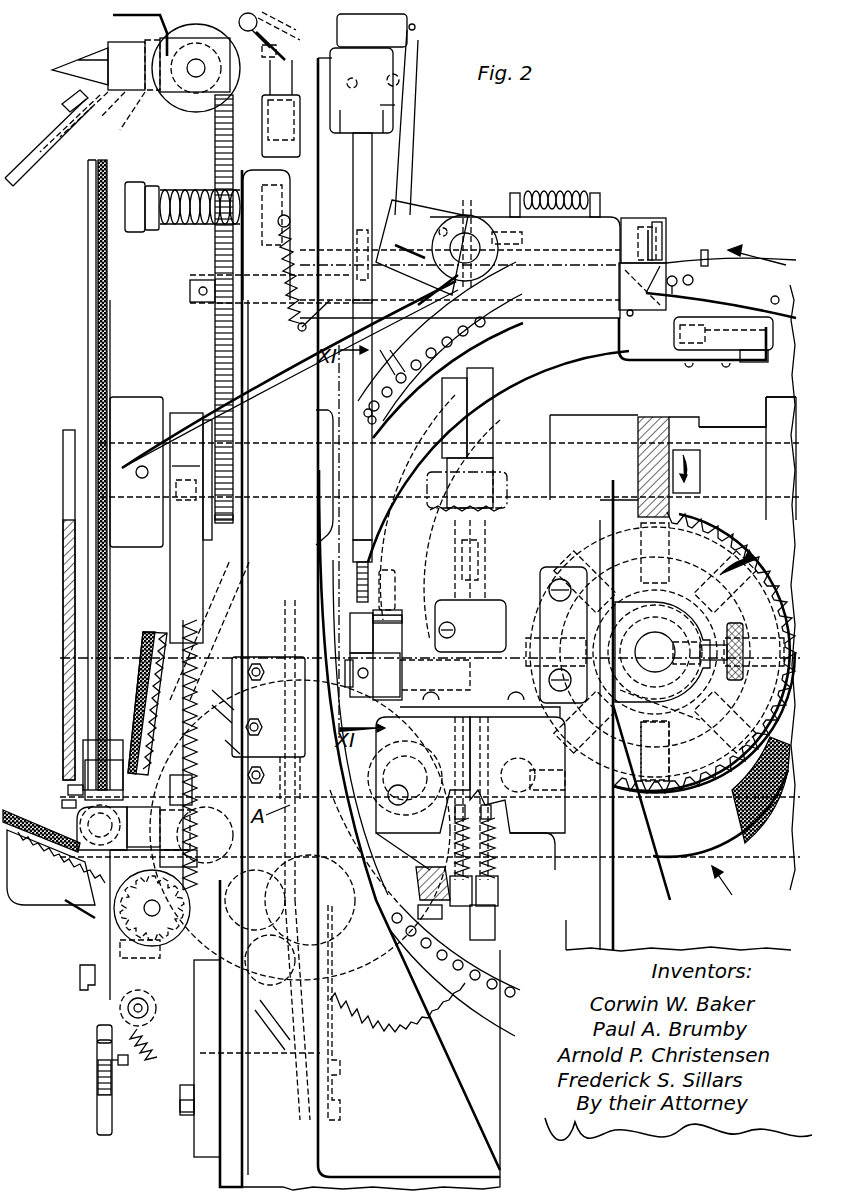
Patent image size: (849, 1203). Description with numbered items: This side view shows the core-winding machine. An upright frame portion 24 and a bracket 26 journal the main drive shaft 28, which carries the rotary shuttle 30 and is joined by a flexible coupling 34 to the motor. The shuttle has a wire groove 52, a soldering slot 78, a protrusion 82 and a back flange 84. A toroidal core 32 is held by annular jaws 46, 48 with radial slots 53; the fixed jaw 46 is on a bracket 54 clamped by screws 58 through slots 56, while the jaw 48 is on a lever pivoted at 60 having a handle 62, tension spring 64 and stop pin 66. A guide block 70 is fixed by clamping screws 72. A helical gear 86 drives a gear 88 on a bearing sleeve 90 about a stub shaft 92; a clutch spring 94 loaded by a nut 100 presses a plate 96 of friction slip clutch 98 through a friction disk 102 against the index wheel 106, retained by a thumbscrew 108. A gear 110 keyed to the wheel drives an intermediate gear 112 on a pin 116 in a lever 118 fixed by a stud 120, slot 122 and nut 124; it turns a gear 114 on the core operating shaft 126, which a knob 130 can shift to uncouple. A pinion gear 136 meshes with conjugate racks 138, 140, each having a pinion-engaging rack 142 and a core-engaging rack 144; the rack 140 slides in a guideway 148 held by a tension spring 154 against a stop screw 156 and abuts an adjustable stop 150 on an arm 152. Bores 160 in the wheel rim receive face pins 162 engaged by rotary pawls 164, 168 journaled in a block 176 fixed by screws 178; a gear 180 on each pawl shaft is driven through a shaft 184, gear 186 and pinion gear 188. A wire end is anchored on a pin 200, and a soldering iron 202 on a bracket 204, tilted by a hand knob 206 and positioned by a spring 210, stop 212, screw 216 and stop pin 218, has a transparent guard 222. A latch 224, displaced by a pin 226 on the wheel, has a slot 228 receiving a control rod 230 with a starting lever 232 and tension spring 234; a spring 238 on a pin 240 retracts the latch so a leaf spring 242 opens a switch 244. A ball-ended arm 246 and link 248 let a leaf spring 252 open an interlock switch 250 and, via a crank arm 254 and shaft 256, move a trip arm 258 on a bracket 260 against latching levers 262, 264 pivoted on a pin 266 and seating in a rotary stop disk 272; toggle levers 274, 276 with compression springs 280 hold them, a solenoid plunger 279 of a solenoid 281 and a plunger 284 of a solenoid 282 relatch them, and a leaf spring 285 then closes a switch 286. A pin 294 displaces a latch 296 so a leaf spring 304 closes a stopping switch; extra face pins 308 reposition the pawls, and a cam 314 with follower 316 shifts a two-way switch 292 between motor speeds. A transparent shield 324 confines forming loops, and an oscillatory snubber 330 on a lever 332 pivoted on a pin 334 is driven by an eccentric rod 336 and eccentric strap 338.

The upright front portion 24 is at (242, 566).
The vertically extending bracket 26 is at (664, 890).
The main drive shaft 28 is at (682, 450).
The rotary shuttle 30 is at (87, 378).
The toroidal core 32 is at (62, 804).
The flexible coupling 34 is at (766, 400).
The annular jaw 46 is at (162, 766).
The annular jaw 48 is at (77, 822).
The wire-carrying groove 52 is at (87, 347).
The radial slots 53 is at (68, 790).
The bracket 54 is at (193, 1147).
The vertically extending slots 56 is at (193, 1063).
The clamp screws 58 is at (182, 1108).
The pivot 60 is at (80, 973).
The operating handle 62 is at (96, 1100).
The tension spring 64 is at (152, 1052).
The stop pin 66 is at (122, 1066).
The guide block 70 is at (78, 775).
The clamping screws 72 is at (200, 845).
The peripheral slot 78 is at (87, 186).
The protrusion 82 is at (85, 745).
The annular back flange 84 is at (108, 308).
The helical gear 86 is at (652, 417).
The gear 88 is at (672, 792).
The bearing sleeve 90 is at (712, 708).
The stub shaft 92 is at (645, 663).
The clutch spring 94 is at (744, 660).
The clutch plate 96 is at (720, 848).
The friction slip clutch 98 is at (733, 883).
The nut 100 is at (700, 540).
The friction disk 102 is at (766, 828).
The index wheel 106 is at (498, 1000).
The thumbscrew 108 is at (768, 600).
The gear 110 is at (670, 750).
The intermediate gear 112 is at (450, 1000).
The gear 114 is at (70, 905).
The pin 116 is at (398, 768).
The lever 118 is at (305, 878).
The stud 120 is at (322, 895).
The vertically disposed slot 122 is at (428, 955).
The nut 124 is at (405, 815).
The core operating shaft 126 is at (118, 920).
The knob 130 is at (112, 950).
The pinion gear 136 is at (240, 895).
The conjugate rack 138 is at (155, 615).
The conjugate rack 140 is at (280, 960).
The pinion-engaging rack 142 is at (196, 718).
The core-engaging rack 144 is at (145, 640).
The guideway 148 is at (18, 900).
The adjustable stop 150 is at (345, 980).
The arm 152 is at (342, 1020).
The tension spring 154 is at (260, 1043).
The stop screw 156 is at (268, 1012).
The bores 160 is at (418, 360).
The face pins 162 is at (778, 296).
The rotary pawl 164 is at (668, 268).
The rotary pawl 168 is at (656, 297).
The block 176 is at (402, 325).
The screws 178 is at (350, 205).
The gear 180 is at (298, 328).
The shaft 184 is at (192, 285).
The gear 186 is at (214, 338).
The pinion gear 188 is at (228, 524).
The anchor pin 200 is at (136, 232).
The soldering iron 202 is at (112, 95).
The bracket 204 is at (284, 58).
The hand knob 206 is at (203, 112).
The spring 210 is at (272, 215).
The stop 212 is at (281, 108).
The screw 216 is at (272, 70).
The stop pin 218 is at (282, 38).
The transparent guard 222 is at (118, 30).
The switch actuating latch 224 is at (645, 218).
The pin 226 is at (660, 245).
The horizontal slot 228 is at (466, 232).
The control rod 230 is at (482, 246).
The starting lever 232 is at (190, 404).
The tension spring 234 is at (283, 316).
The spring 238 is at (560, 215).
The pin 240 is at (515, 193).
The leaf spring 242 is at (402, 160).
The switch 244 is at (409, 26).
The ball-ended arm 246 is at (432, 205).
The link 248 is at (378, 420).
The interlock switch 250 is at (376, 128).
The leaf spring 252 is at (347, 125).
The crank arm 254 is at (390, 615).
The shaft 256 is at (412, 650).
The trip arm 258 is at (420, 577).
The bracket 260 is at (495, 770).
The latching lever 262 is at (430, 510).
The latching lever 264 is at (497, 485).
The pin 266 is at (402, 682).
The rotary stop disk 272 is at (495, 416).
The toggle lever 274 is at (452, 930).
The toggle lever 276 is at (488, 940).
The solenoid plunger 279 is at (525, 790).
The compression springs 280 is at (503, 843).
The solenoid 281 is at (556, 845).
The solenoid 282 is at (455, 848).
The plunger 284 is at (410, 770).
The leaf spring 285 is at (508, 592).
The switch 286 is at (420, 535).
The two-way switch 292 is at (768, 352).
The pin 294 is at (738, 258).
The switch actuating latch 296 is at (662, 225).
The leaf spring 304 is at (420, 140).
The extra face pins 308 is at (478, 330).
The cam 314 is at (560, 360).
The follower 316 is at (675, 333).
The transparent shield 324 is at (62, 668).
The oscillatory snubber 330 is at (186, 790).
The lever 332 is at (97, 1033).
The pin 334 is at (127, 1010).
The eccentric rod 336 is at (196, 742).
The eccentric strap 338 is at (189, 528).